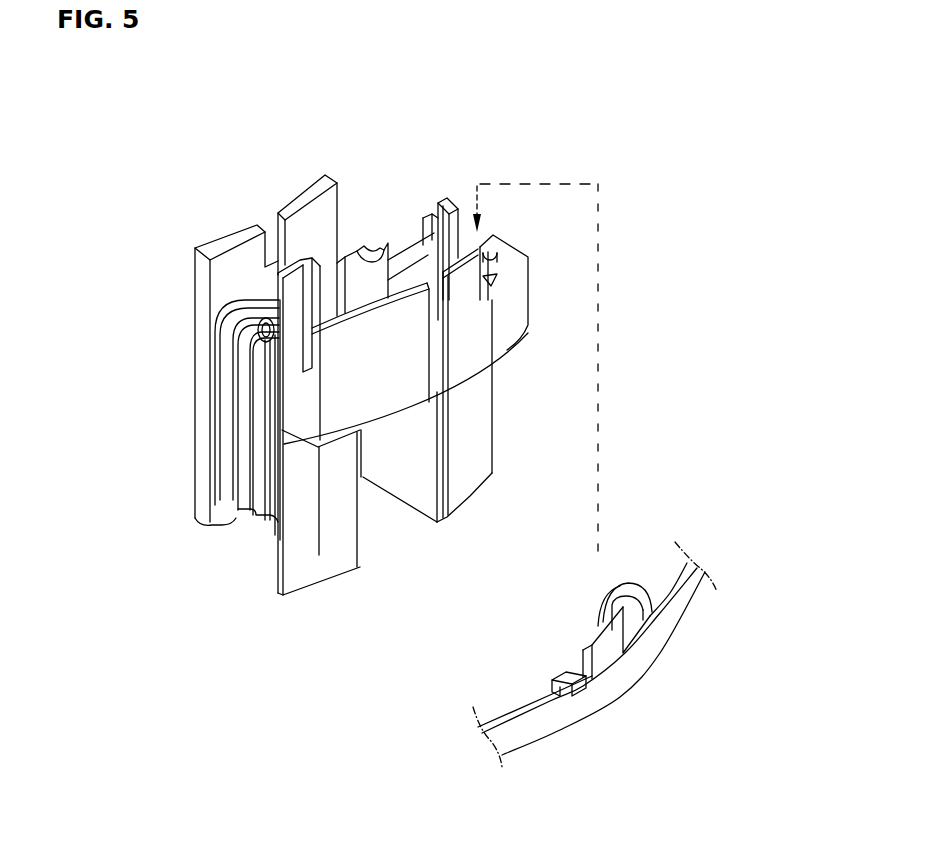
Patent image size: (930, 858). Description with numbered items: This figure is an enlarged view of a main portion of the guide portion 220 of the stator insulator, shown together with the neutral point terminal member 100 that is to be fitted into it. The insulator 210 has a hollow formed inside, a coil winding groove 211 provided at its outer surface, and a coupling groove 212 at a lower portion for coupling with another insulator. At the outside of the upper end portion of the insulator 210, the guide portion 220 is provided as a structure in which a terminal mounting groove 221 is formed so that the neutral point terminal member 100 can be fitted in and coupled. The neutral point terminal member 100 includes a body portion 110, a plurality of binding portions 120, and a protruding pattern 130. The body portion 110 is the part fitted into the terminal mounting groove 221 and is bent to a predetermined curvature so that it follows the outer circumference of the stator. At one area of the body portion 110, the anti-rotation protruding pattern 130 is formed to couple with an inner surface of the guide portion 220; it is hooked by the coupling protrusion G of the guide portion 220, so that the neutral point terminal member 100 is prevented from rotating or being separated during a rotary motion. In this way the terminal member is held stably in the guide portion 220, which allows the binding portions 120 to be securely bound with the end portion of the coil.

The neutral point terminal member 100 is at (548, 733).
The body portion 110 is at (667, 625).
The binding portion 120 is at (627, 585).
The protruding pattern 130 is at (618, 672).
The insulator 210 is at (425, 92).
The coil winding groove 211 is at (338, 203).
The coupling groove 212 is at (372, 242).
The guide portion 220 is at (355, 402).
The terminal mounting groove 221 is at (307, 342).
The coupling protrusion G is at (463, 287).